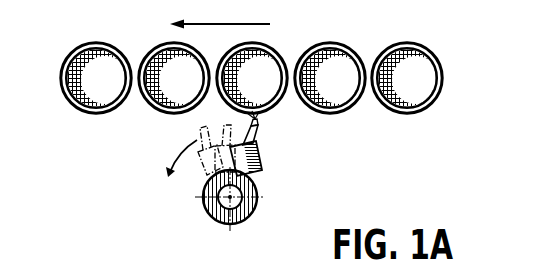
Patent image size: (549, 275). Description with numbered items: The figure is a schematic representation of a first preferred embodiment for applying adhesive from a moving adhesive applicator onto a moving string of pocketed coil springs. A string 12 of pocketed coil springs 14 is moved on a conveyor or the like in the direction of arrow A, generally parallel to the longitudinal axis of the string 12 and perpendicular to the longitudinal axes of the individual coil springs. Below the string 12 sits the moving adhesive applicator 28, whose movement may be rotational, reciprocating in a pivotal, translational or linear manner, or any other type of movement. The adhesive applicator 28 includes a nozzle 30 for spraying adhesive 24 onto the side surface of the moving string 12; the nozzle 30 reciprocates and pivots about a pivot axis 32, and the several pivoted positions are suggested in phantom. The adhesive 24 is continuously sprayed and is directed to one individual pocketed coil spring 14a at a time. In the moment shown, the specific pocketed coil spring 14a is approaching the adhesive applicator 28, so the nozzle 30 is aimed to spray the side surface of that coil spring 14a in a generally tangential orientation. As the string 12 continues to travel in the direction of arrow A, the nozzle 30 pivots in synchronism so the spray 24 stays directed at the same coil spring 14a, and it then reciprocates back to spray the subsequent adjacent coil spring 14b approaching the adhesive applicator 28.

The string 12 is at (450, 88).
The pocketed coil spring 14 is at (93, 41).
The pocketed coil spring 14a is at (270, 42).
The subsequent adjacent coil spring 14b is at (333, 40).
The arrow A is at (225, 21).
The adhesive 24 is at (268, 119).
The adhesive applicator 28 is at (201, 221).
The nozzle 30 is at (258, 144).
The pivot axis 32 is at (232, 198).